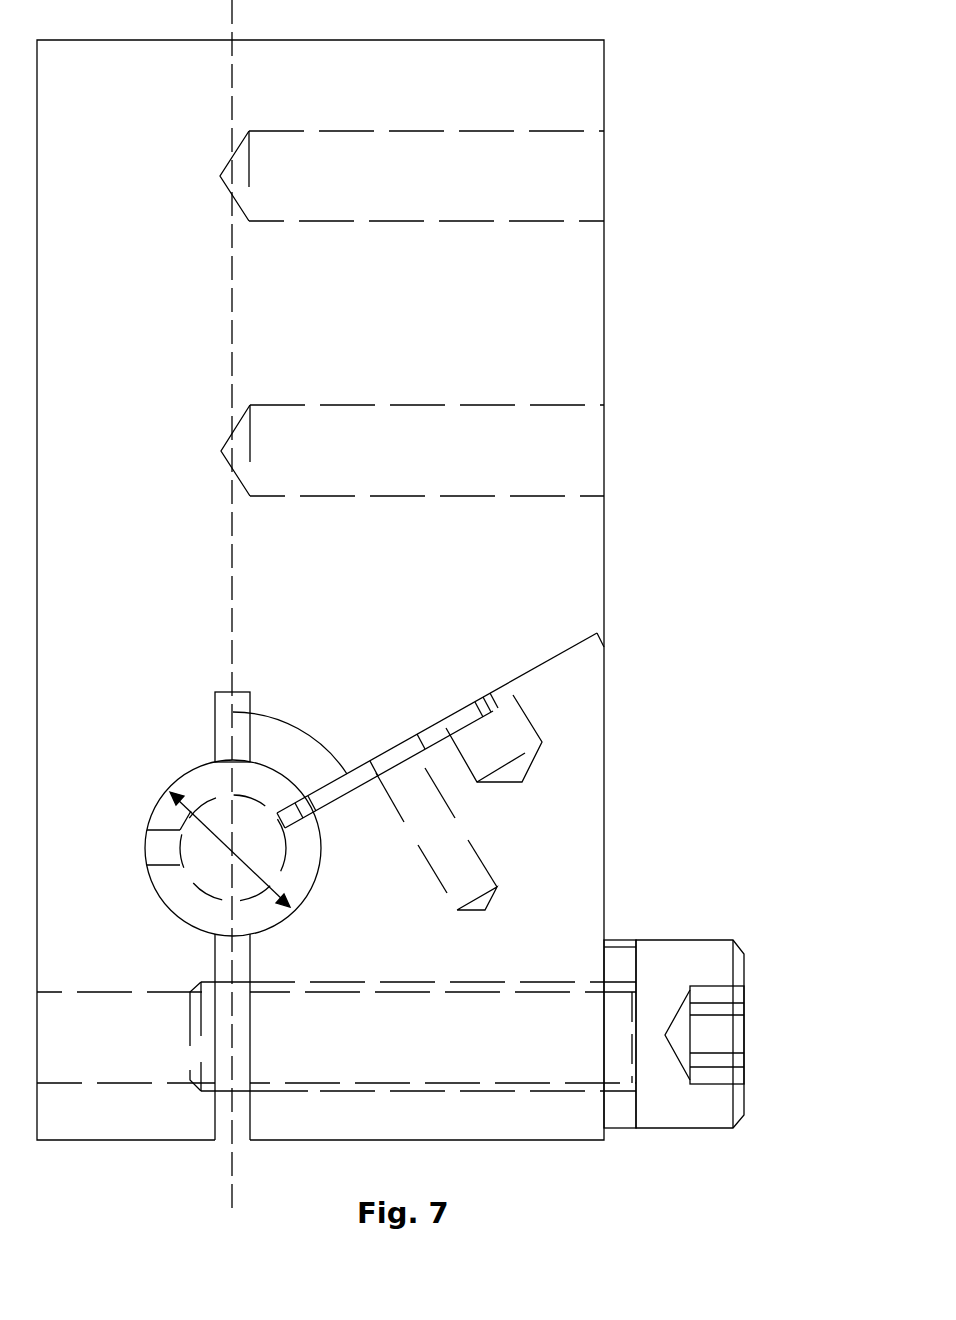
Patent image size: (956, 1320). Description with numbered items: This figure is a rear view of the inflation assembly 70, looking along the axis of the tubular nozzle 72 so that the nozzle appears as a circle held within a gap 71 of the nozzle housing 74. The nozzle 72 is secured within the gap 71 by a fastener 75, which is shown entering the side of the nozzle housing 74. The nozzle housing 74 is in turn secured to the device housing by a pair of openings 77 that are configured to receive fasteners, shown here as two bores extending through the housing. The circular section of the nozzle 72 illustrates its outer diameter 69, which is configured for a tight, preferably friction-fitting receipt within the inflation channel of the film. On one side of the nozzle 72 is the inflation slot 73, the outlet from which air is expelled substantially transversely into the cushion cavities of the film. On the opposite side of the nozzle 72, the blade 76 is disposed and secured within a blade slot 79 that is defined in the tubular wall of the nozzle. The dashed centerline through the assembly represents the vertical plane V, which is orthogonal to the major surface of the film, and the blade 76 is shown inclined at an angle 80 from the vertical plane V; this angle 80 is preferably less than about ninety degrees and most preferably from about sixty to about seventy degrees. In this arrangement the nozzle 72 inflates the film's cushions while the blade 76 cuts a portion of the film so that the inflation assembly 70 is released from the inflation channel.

The outer diameter 69 is at (283, 886).
The inflation assembly 70 is at (409, 590).
The gap 71 is at (240, 1128).
The nozzle 72 is at (216, 848).
The inflation slot 73 is at (155, 851).
The nozzle housing 74 is at (582, 553).
The fastener 75 is at (703, 957).
The blade 76 is at (492, 703).
The openings 77 is at (582, 177).
The blade slot 79 is at (287, 812).
The angle 80 is at (287, 722).
The vertical plane V is at (233, 316).